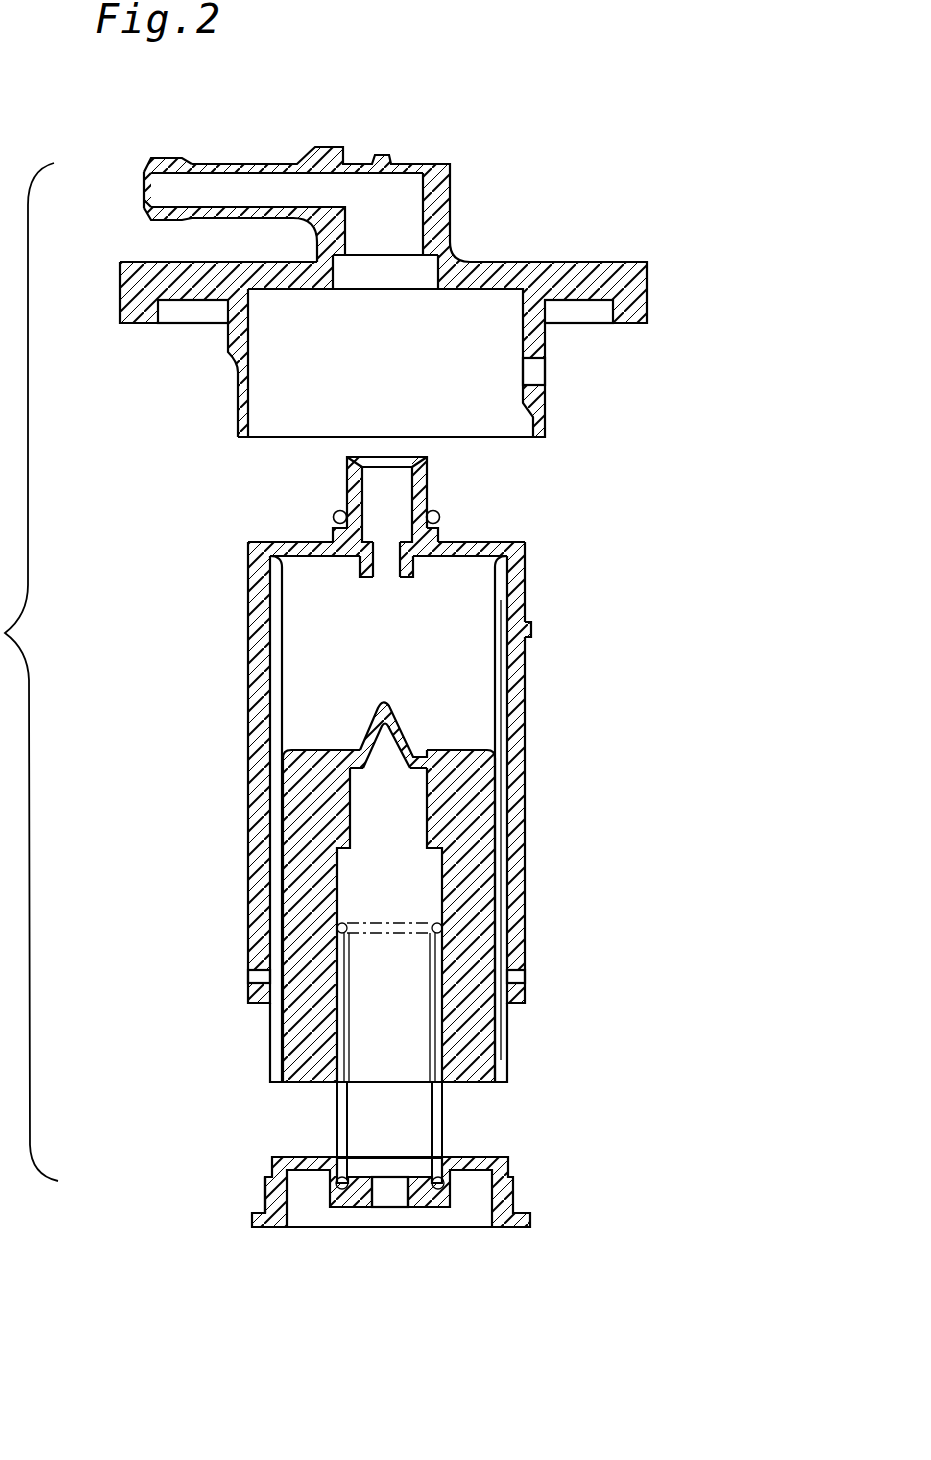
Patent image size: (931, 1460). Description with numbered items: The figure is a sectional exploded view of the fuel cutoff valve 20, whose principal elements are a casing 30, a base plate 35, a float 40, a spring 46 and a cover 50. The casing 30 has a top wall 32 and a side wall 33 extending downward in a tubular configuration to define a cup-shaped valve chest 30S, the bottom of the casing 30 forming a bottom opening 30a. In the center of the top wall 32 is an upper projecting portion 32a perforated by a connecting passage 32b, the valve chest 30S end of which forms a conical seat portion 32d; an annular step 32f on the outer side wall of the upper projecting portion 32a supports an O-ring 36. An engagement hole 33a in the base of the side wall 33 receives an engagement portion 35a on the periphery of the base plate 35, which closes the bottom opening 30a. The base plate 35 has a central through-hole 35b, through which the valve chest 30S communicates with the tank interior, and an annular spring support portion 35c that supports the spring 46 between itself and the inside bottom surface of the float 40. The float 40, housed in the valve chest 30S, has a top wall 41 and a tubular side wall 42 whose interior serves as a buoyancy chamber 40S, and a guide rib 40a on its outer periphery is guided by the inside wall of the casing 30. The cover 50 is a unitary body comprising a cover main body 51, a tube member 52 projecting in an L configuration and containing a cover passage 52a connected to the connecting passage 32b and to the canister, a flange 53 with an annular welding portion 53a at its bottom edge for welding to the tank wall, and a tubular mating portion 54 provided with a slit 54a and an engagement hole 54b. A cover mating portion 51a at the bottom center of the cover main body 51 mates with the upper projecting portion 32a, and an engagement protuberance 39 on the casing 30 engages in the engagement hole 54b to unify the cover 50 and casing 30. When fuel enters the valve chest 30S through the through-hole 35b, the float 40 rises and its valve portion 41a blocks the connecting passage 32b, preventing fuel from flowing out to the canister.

The fuel cutoff valve 20 is at (697, 264).
The casing 30 is at (599, 550).
The valve chest 30S is at (298, 683).
The bottom opening 30a is at (497, 975).
The top wall 32 is at (252, 542).
The upper projecting portion 32a is at (347, 487).
The connecting passage 32b is at (396, 478).
The conical seat portion 32d is at (373, 574).
The annular step 32f is at (445, 530).
The side wall 33 is at (250, 665).
The engagement hole 33a is at (250, 975).
The base plate 35 is at (500, 1162).
The engagement portion 35a is at (264, 1180).
The through-hole 35b is at (390, 1200).
The spring support portion 35c is at (334, 1184).
The O-ring 36 is at (440, 512).
The engagement protuberance 39 is at (532, 630).
The float 40 is at (628, 712).
The buoyancy chamber 40S is at (396, 888).
The guide rib 40a is at (503, 815).
The top wall 41 is at (498, 742).
The valve portion 41a is at (396, 718).
The tubular side wall 42 is at (478, 778).
The spring 46 is at (440, 1118).
The cover 50 is at (425, 104).
The cover main body 51 is at (478, 272).
The cover mating portion 51a is at (422, 210).
The tube member 52 is at (262, 163).
The cover passage 52a is at (192, 187).
The flange 53 is at (578, 272).
The annular welding portion 53a is at (637, 323).
The mating portion 54 is at (535, 400).
The slit 54a is at (236, 398).
The engagement hole 54b is at (530, 367).